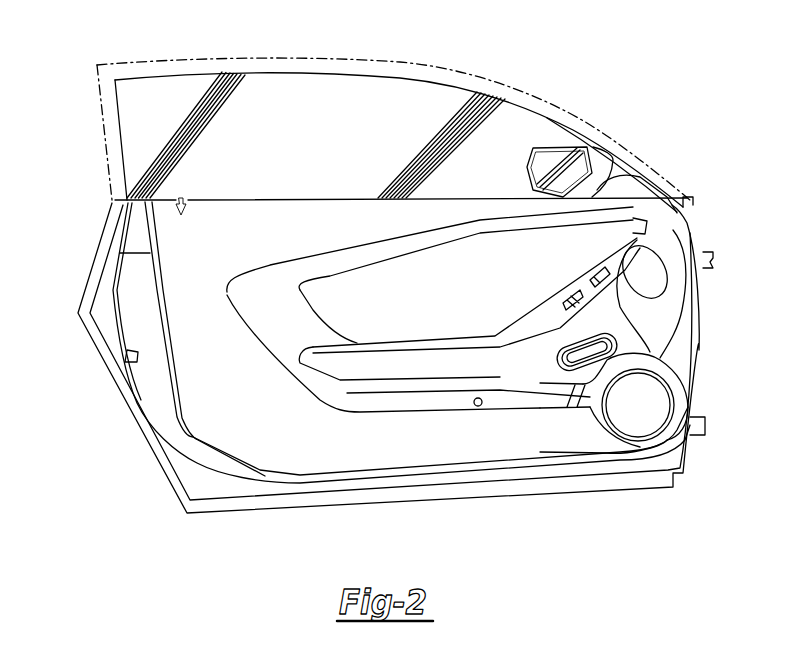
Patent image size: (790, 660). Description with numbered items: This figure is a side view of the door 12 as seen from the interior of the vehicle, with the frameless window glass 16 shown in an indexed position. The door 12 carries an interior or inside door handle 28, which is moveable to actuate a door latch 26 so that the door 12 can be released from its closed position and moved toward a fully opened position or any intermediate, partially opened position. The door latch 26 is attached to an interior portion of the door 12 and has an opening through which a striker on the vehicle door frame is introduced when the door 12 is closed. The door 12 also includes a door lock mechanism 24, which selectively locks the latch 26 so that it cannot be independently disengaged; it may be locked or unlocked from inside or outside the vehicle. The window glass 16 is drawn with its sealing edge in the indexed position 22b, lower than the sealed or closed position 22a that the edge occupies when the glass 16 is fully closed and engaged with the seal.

The door 12 is at (62, 293).
The window glass 16 is at (264, 92).
The sealed or closed position of the sealing edge 22a is at (105, 133).
The indexed position of the sealing edge 22b is at (120, 145).
The door lock mechanism 24 is at (181, 198).
The door latch 26 is at (133, 364).
The inside door handle 28 is at (595, 352).